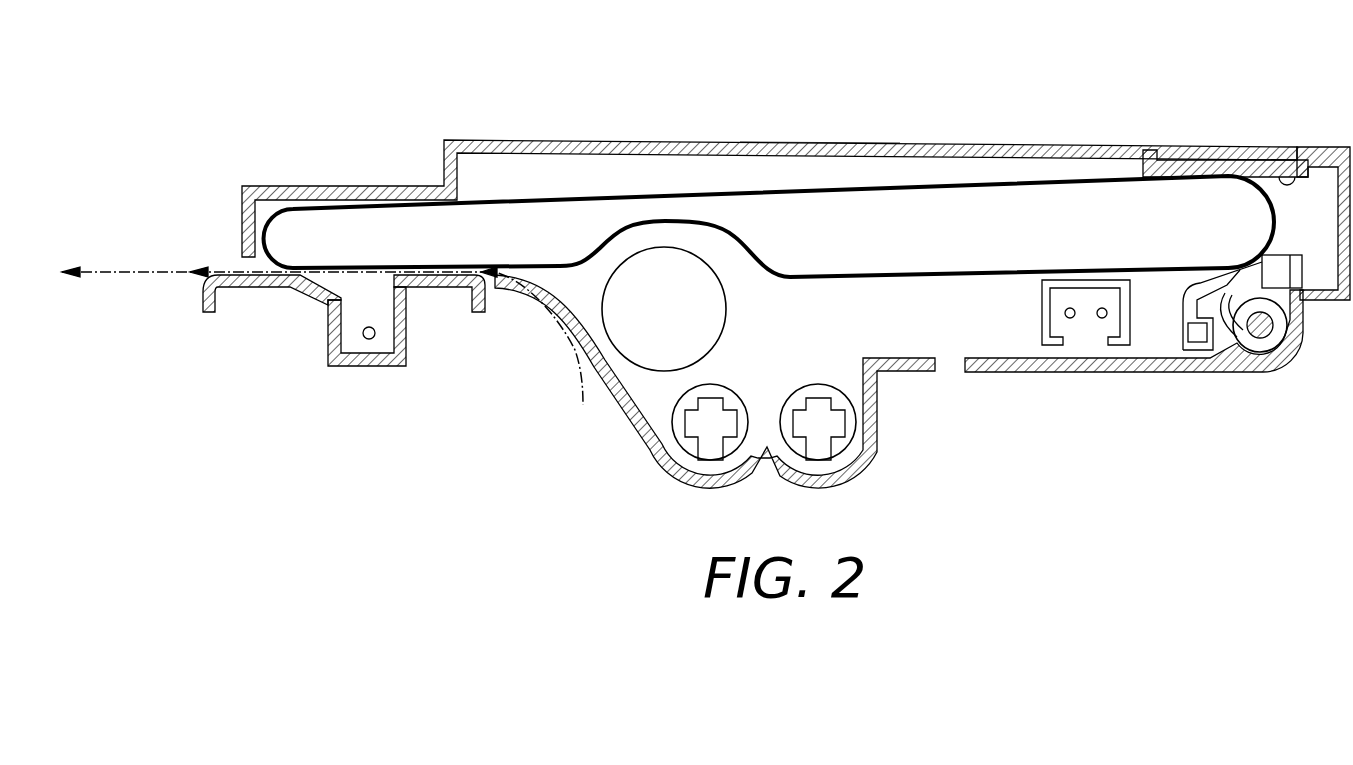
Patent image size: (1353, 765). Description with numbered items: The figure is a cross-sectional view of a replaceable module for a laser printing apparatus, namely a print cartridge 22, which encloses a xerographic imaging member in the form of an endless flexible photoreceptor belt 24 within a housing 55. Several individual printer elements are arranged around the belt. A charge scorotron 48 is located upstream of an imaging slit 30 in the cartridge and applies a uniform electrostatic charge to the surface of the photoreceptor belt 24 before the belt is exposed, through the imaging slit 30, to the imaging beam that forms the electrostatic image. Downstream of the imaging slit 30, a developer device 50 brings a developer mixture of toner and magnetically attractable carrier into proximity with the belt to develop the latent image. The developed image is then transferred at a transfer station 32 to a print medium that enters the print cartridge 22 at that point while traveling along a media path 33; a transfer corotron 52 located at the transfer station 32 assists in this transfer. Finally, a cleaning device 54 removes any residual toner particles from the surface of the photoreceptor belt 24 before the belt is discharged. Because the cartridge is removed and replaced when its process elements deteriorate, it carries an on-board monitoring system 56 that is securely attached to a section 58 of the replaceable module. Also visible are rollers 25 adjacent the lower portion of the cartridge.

The print cartridge 22 is at (570, 138).
The photoreceptor belt 24 is at (943, 190).
The rollers 25 is at (847, 473).
The imaging slit 30 is at (950, 376).
The transfer station 32 is at (288, 297).
The media path 33 is at (150, 276).
The charge scorotron 48 is at (1040, 312).
The developer device 50 is at (726, 312).
The transfer corotron 52 is at (360, 368).
The cleaning device 54 is at (1237, 268).
The housing 55 is at (812, 145).
The on-board monitoring system 56 is at (1200, 150).
The section 58 is at (1302, 160).